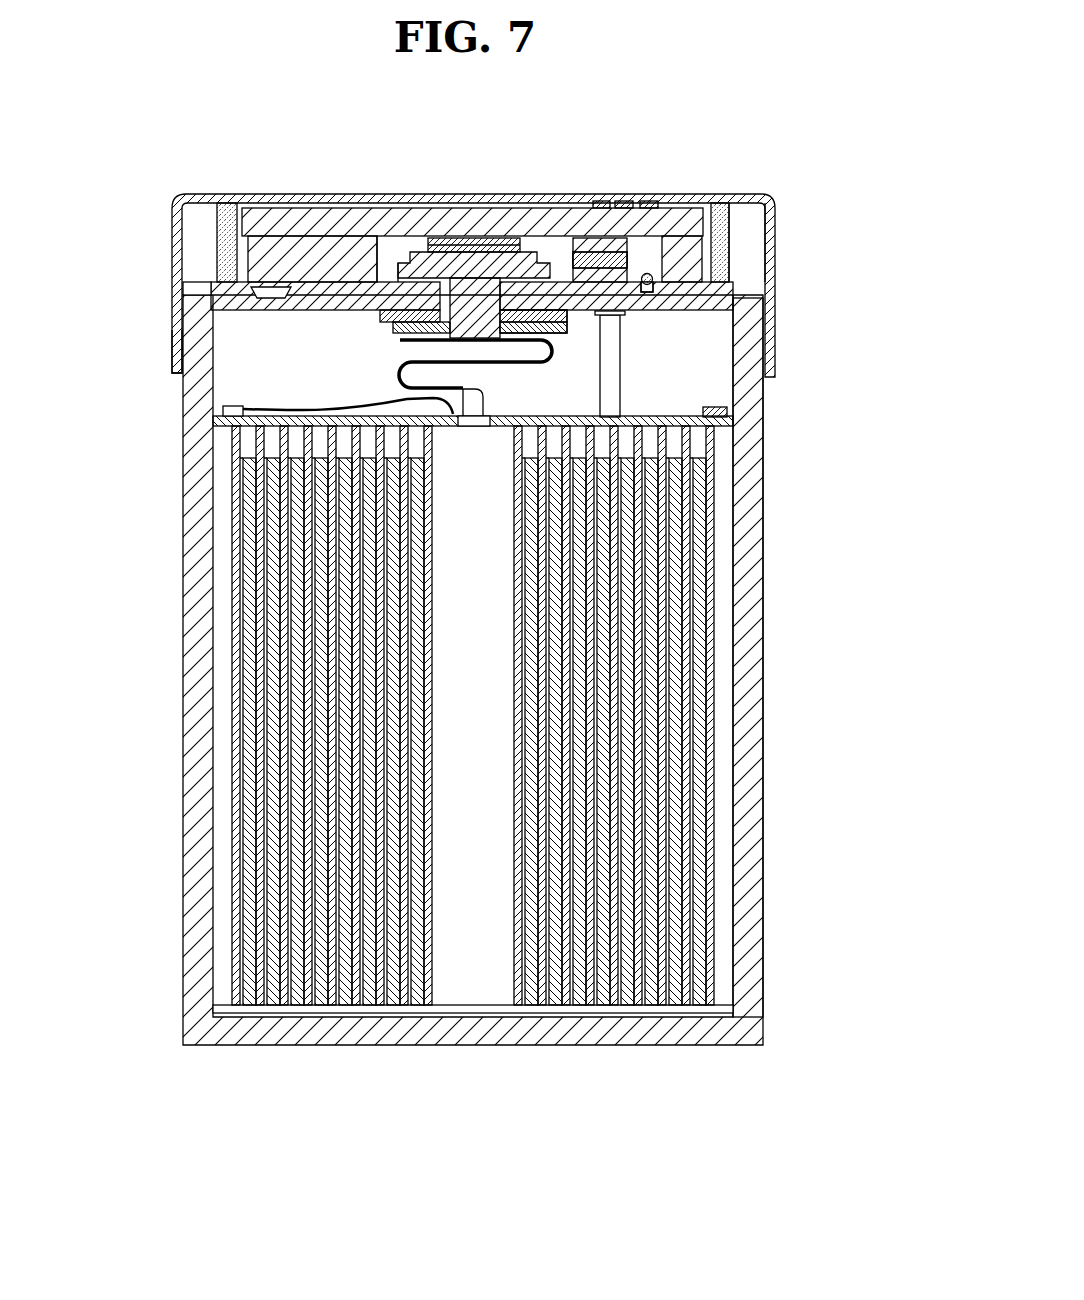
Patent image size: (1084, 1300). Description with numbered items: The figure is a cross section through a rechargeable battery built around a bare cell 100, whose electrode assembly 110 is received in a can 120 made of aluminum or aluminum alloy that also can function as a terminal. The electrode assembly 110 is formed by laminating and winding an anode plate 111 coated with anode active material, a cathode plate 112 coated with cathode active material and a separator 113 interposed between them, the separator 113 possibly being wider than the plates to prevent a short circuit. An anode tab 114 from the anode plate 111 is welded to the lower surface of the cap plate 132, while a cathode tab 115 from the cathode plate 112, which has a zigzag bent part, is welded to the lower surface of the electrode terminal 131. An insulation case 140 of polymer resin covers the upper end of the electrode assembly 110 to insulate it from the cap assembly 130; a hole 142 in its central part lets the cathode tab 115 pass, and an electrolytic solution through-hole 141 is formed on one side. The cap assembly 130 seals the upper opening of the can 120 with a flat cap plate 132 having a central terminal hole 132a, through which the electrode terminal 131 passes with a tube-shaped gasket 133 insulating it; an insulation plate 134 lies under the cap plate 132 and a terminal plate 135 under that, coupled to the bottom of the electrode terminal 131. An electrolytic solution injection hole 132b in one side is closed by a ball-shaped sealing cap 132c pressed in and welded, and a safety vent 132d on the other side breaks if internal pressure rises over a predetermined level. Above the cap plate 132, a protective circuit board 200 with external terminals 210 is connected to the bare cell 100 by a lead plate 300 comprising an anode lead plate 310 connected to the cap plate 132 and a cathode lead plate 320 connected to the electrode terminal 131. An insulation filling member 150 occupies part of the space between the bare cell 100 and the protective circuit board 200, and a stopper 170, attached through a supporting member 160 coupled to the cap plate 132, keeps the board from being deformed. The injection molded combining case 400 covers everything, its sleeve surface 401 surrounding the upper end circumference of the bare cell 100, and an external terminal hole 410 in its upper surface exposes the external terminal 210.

The bare cell 100 is at (183, 517).
The electrode assembly 110 is at (489, 798).
The anode plate 111 is at (672, 1007).
The cathode plate 112 is at (695, 1007).
The separator 113 is at (685, 1007).
The anode tab 114 is at (623, 367).
The cathode tab 115 is at (400, 373).
The can 120 is at (760, 578).
The cap assembly 130 is at (514, 311).
The electrode terminal 131 is at (412, 258).
The cap plate 132 is at (190, 284).
The terminal hole 132a is at (513, 318).
The electrolytic solution injection hole 132b is at (648, 316).
The sealing cap 132c is at (655, 278).
The safety vent 132d is at (275, 308).
The gasket 133 is at (398, 268).
The insulation plate 134 is at (380, 317).
The terminal plate 135 is at (398, 333).
The insulation case 140 is at (760, 428).
The electrolytic solution through-hole 141 is at (778, 399).
The hole 142 is at (225, 400).
The insulation filling member 150 is at (291, 240).
The supporting member 160 is at (745, 230).
The stopper 170 is at (226, 208).
The protective circuit board 200 is at (362, 224).
The external terminal 210 is at (645, 200).
The lead plate 300 is at (527, 194).
The anode lead plate 310 is at (570, 255).
The cathode lead plate 320 is at (488, 237).
The combining case 400 is at (183, 197).
The sleeve surface 401 is at (175, 326).
The external terminal hole 410 is at (601, 200).